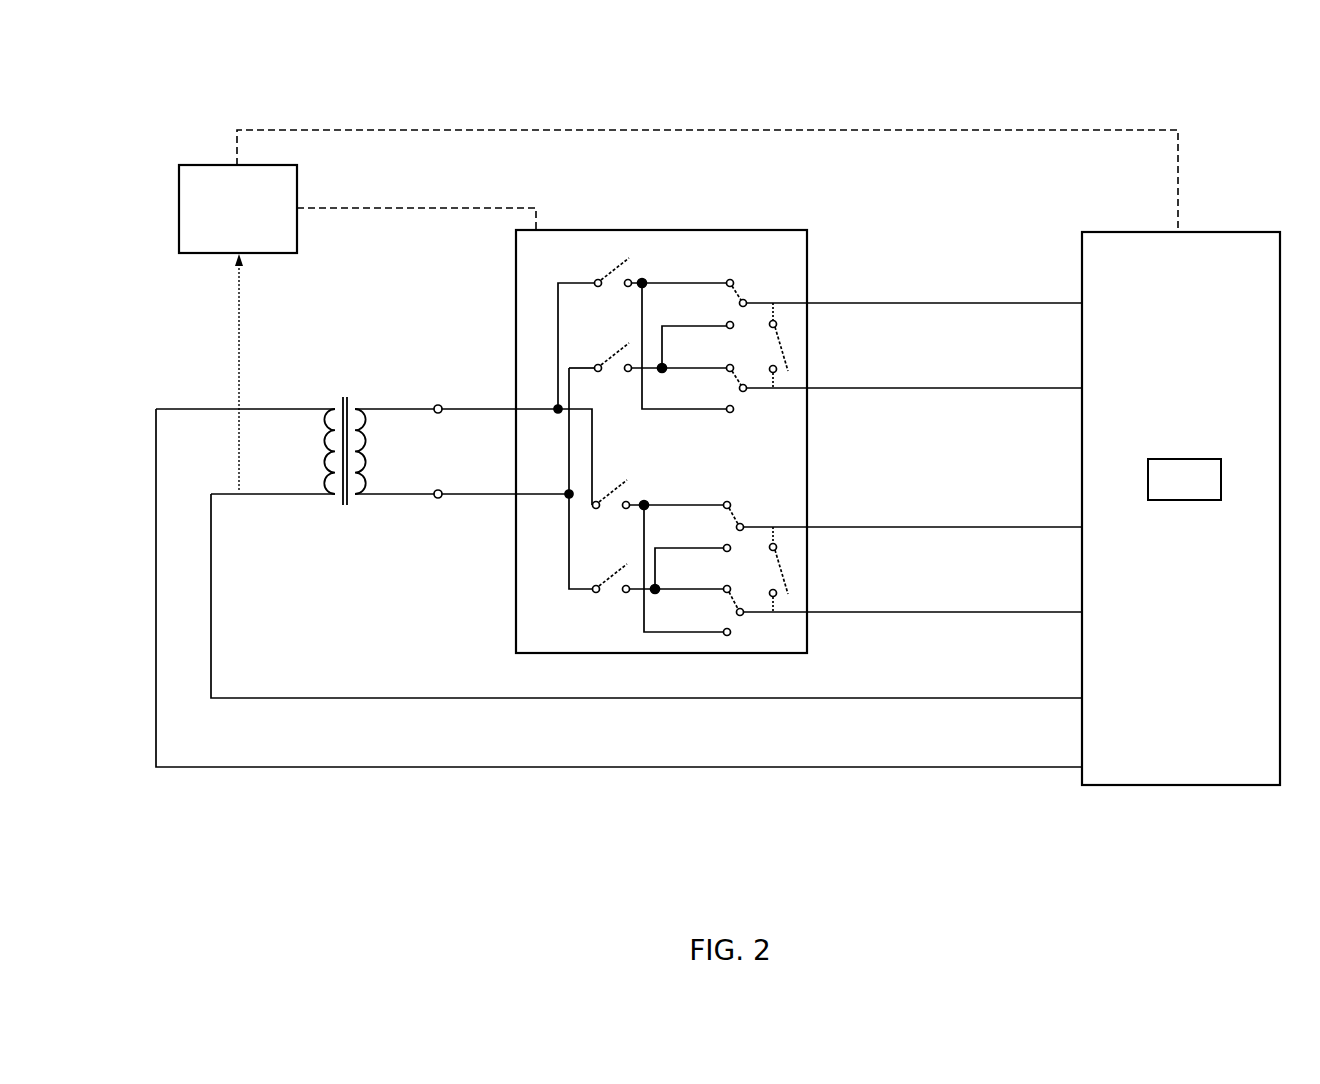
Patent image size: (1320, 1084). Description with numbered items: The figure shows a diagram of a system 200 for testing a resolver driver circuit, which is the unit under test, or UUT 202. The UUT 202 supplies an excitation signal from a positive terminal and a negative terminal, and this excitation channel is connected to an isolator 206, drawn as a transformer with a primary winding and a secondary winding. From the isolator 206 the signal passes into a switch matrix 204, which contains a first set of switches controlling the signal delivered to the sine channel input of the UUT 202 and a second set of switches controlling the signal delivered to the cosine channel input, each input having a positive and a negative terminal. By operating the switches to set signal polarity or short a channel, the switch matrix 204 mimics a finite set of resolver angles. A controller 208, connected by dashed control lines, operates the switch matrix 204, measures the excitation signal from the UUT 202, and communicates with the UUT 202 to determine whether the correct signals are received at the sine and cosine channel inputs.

The system 200 is at (223, 82).
The unit under test (UUT) 202 is at (726, 534).
The switch matrix 204 is at (750, 203).
The isolator 206 is at (333, 505).
The controller 208 is at (238, 209).